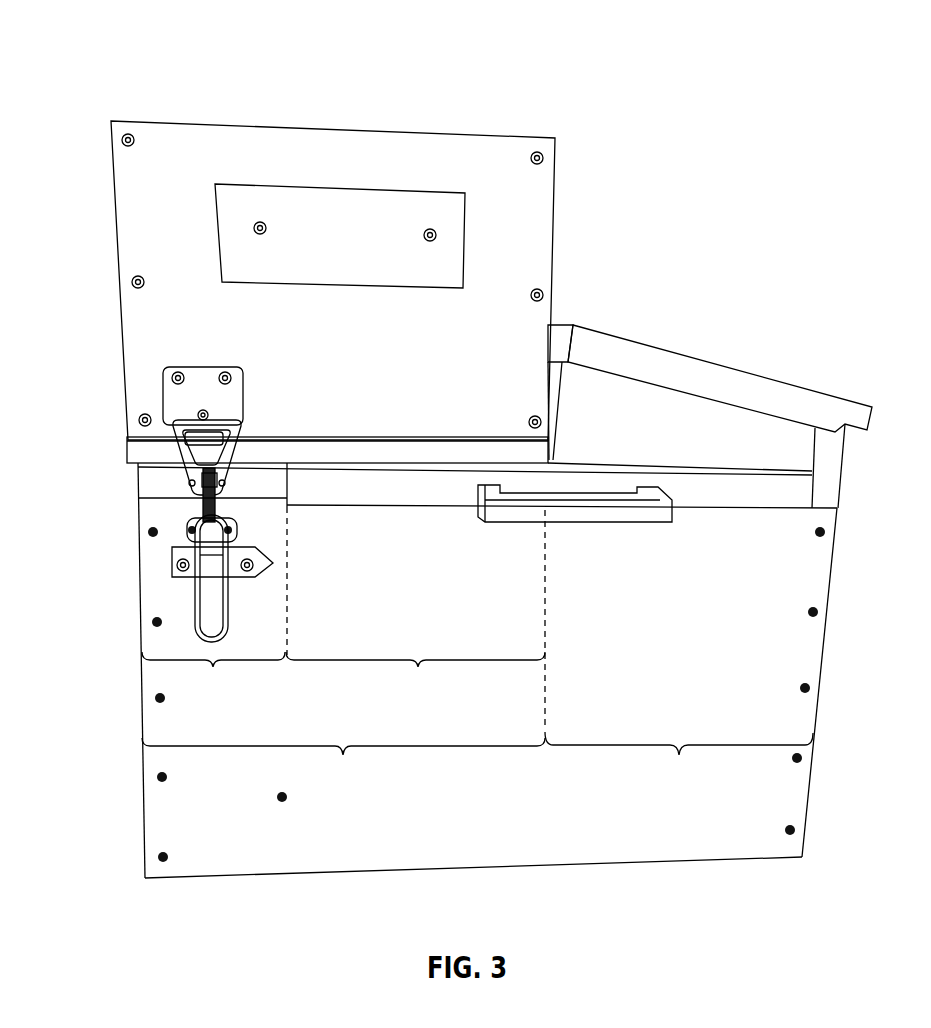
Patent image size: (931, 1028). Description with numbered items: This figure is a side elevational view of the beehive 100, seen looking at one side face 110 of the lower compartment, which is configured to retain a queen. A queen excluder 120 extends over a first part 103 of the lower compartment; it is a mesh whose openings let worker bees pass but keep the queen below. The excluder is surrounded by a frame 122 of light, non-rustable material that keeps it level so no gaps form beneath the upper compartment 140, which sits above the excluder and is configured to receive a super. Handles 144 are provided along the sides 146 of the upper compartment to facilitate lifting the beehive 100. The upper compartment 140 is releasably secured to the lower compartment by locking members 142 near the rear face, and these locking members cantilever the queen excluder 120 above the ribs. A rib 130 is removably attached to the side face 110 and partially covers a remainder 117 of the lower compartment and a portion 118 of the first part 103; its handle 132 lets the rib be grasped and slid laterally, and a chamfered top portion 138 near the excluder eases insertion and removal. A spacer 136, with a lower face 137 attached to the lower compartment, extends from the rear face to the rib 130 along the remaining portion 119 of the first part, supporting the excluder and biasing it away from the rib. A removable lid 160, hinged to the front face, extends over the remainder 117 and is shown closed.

The beehive 100 is at (688, 50).
The first part of the lower compartment 103 is at (343, 765).
The side face 110 is at (478, 853).
The remainder of the lower compartment 117 is at (679, 761).
The portion of the first part 118 is at (415, 678).
The remaining portion of the first part 119 is at (213, 678).
The queen excluder 120 is at (357, 453).
The frame 122 is at (135, 450).
The rib 130 is at (718, 497).
The handle 132 is at (575, 513).
The spacer 136 is at (252, 477).
The lower face 137 is at (153, 495).
The chamfered top portion 138 is at (150, 467).
The upper compartment 140 is at (131, 222).
The locking member 142 is at (197, 378).
The handle 144 is at (377, 272).
The side of upper compartment 146 is at (340, 168).
The lid 160 is at (640, 353).